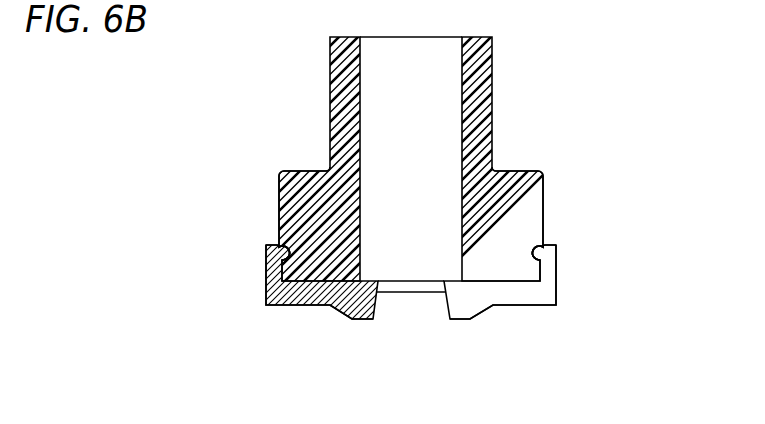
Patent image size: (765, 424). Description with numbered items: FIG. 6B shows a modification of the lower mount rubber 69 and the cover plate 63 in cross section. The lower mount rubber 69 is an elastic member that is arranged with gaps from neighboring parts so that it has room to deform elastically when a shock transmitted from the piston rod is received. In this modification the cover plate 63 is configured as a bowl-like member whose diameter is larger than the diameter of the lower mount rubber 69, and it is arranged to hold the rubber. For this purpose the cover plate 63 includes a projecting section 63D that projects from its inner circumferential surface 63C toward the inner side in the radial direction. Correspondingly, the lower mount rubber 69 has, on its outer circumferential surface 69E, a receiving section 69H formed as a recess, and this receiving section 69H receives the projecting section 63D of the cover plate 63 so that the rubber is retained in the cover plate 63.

The lower mount rubber 69 is at (527, 135).
The outer circumferential surface 69E is at (545, 183).
The receiving section 69H is at (541, 251).
The cover plate 63 is at (523, 311).
The inner circumferential surface 63C is at (541, 277).
The projecting section 63D is at (535, 241).